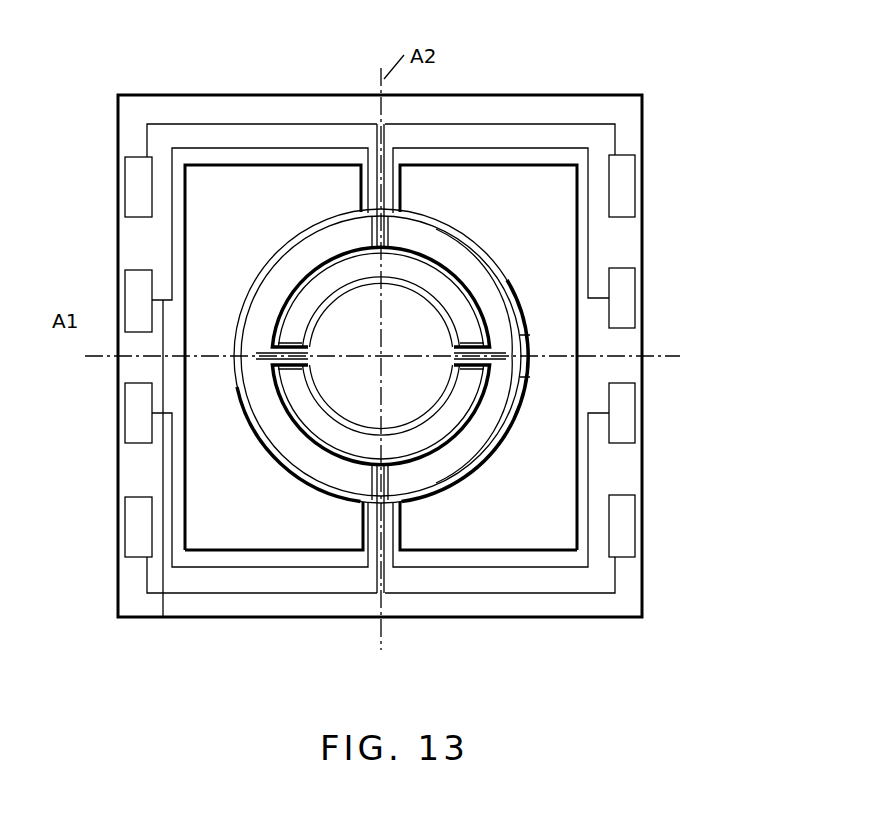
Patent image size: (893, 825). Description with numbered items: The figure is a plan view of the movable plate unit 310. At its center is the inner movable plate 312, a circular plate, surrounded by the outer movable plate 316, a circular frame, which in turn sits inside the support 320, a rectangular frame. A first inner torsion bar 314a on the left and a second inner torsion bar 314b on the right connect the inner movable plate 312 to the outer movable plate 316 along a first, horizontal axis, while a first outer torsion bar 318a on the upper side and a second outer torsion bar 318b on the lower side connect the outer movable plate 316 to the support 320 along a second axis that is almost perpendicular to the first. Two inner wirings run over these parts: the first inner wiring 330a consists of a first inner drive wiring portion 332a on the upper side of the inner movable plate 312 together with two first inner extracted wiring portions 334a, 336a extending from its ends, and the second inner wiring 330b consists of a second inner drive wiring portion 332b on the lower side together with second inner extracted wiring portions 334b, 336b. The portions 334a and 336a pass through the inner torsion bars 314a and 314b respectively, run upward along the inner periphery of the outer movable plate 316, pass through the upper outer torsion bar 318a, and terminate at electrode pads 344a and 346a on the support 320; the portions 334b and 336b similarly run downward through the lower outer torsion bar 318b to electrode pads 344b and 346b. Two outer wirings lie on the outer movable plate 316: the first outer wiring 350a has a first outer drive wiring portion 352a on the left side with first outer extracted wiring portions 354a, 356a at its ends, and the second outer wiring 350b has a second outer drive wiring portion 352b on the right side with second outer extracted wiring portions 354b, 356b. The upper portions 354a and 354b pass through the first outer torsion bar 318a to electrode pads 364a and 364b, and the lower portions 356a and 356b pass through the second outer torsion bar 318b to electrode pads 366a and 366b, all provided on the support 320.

The movable plate unit 310 is at (93, 76).
The inner movable plate 312 is at (327, 297).
The first inner torsion bar 314a is at (285, 372).
The second inner torsion bar 314b is at (478, 367).
The outer movable plate 316 is at (490, 256).
The first outer torsion bar 318a is at (362, 185).
The second outer torsion bar 318b is at (403, 538).
The support 320 is at (187, 110).
The first inner wiring 330a is at (562, 90).
The second inner wiring 330b is at (632, 658).
The first inner drive wiring portion 332a is at (403, 287).
The second inner drive wiring portion 332b is at (410, 433).
The first inner extracted wiring portion 334a is at (363, 243).
The second inner extracted wiring portion 334b is at (367, 473).
The first inner extracted wiring portion 336a is at (438, 255).
The second inner extracted wiring portion 336b is at (452, 453).
The electrode pad 344a is at (126, 190).
The electrode pad 344b is at (126, 528).
The electrode pad 346a is at (628, 185).
The electrode pad 346b is at (628, 526).
The first outer wiring 350a is at (250, 501).
The second outer wiring 350b is at (599, 429).
The first outer drive wiring portion 352a is at (237, 373).
The second outer drive wiring portion 352b is at (532, 335).
The first outer extracted wiring portion 354a is at (163, 618).
The second outer extracted wiring portion 354b is at (603, 292).
The first outer extracted wiring portion 356a is at (133, 658).
The second outer extracted wiring portion 356b is at (590, 430).
The electrode pad 364a is at (126, 300).
The electrode pad 364b is at (623, 283).
The electrode pad 366a is at (126, 415).
The electrode pad 366b is at (623, 423).